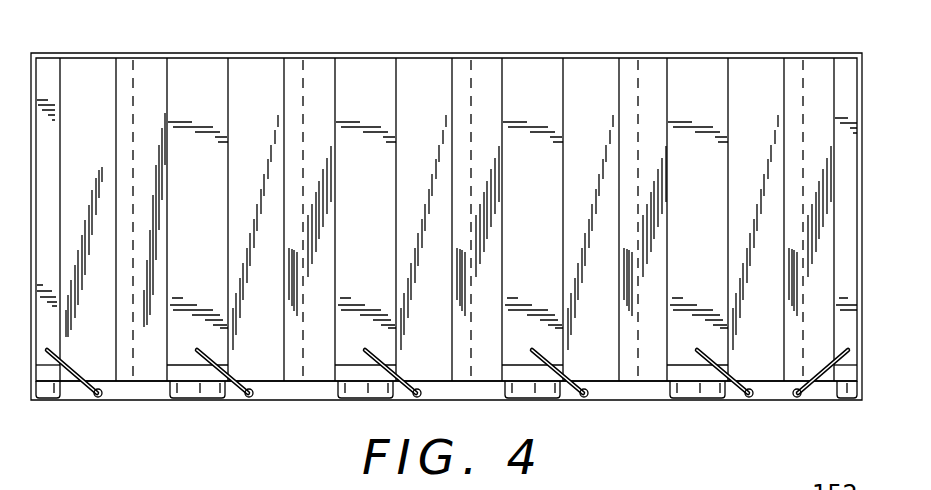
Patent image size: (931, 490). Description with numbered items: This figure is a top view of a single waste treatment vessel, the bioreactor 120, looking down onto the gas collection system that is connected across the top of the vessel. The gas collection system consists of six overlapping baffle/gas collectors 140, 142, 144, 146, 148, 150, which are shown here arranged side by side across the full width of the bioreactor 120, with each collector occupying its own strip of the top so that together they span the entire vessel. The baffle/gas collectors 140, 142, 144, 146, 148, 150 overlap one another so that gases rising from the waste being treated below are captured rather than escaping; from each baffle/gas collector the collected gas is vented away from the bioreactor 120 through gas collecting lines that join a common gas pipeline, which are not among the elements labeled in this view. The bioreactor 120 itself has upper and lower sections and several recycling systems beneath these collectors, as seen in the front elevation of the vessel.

The bioreactor 120 is at (69, 403).
The baffle/gas collector 140 is at (47, 65).
The baffle/gas collector 142 is at (190, 67).
The baffle/gas collector 144 is at (357, 67).
The baffle/gas collector 146 is at (517, 67).
The baffle/gas collector 148 is at (682, 63).
The baffle/gas collector 150 is at (853, 38).